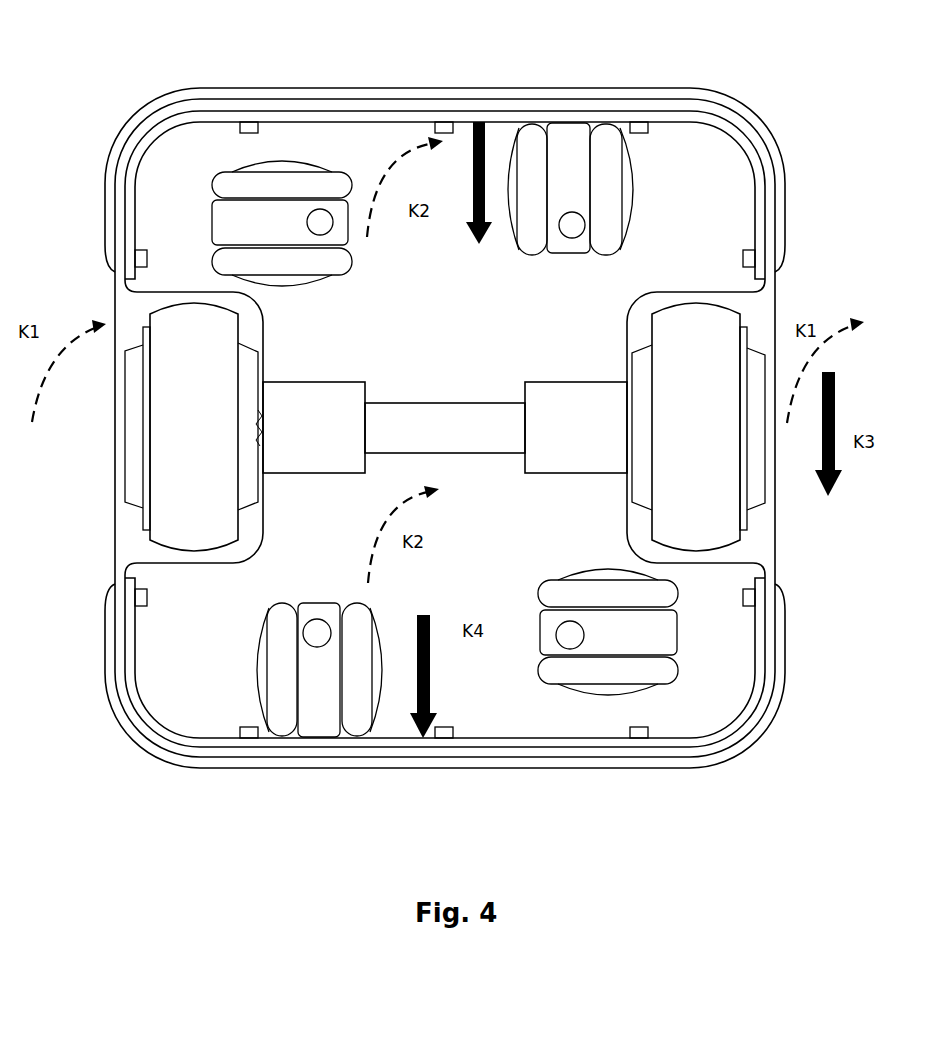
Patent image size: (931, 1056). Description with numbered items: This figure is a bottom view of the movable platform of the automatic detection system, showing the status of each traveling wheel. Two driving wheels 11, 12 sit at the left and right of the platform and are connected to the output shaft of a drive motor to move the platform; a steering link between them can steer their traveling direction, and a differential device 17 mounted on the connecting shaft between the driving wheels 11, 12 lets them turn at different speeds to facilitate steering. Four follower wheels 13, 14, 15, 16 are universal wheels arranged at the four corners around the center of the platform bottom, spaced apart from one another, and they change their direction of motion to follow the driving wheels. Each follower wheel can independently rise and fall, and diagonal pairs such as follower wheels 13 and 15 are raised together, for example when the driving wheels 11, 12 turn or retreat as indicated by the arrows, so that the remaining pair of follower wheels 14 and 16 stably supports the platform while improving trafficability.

The driving wheel 11 is at (177, 459).
The driving wheel 12 is at (720, 518).
The follower wheel 13 is at (238, 217).
The follower wheel 14 is at (569, 155).
The follower wheel 15 is at (655, 636).
The follower wheel 16 is at (320, 720).
The differential device 17 is at (345, 452).